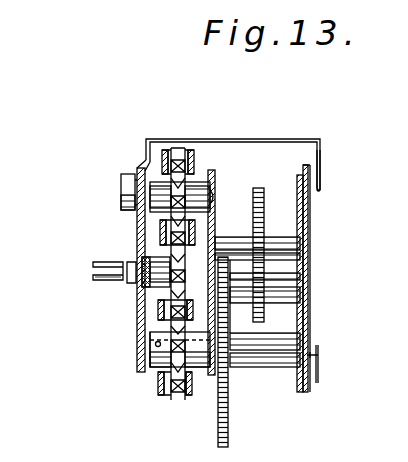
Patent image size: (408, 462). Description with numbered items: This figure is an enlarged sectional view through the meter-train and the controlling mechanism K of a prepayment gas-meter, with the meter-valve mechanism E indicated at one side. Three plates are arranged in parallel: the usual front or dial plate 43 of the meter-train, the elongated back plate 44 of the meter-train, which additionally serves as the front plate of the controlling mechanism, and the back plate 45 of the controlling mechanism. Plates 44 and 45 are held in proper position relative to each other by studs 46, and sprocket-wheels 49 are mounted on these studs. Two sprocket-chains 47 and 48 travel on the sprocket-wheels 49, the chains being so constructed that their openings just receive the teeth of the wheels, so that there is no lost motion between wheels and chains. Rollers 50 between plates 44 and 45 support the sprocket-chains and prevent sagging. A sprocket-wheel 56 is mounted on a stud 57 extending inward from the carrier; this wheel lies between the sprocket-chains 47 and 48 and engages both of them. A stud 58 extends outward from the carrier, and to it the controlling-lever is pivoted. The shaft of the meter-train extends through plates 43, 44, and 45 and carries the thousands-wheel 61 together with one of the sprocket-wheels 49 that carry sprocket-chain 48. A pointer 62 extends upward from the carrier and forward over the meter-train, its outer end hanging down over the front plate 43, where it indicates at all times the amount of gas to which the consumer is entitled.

The front or dial plate 43 is at (316, 278).
The back plate of the meter-train 44 is at (217, 232).
The back plate of the controlling mechanism 45 is at (142, 324).
The studs 46 is at (214, 192).
The sprocket-chain 47 is at (180, 150).
The sprocket-chain 48 is at (168, 400).
The sprocket-wheels 49 is at (192, 152).
The rollers 50 is at (135, 353).
The sprocket-wheel 56 is at (184, 298).
The stud 57 is at (132, 278).
The stud 58 is at (80, 278).
The thousands-wheel 61 is at (230, 430).
The pointer 62 is at (332, 170).
The meter-valve mechanism E is at (265, 255).
The controlling mechanism K is at (192, 274).